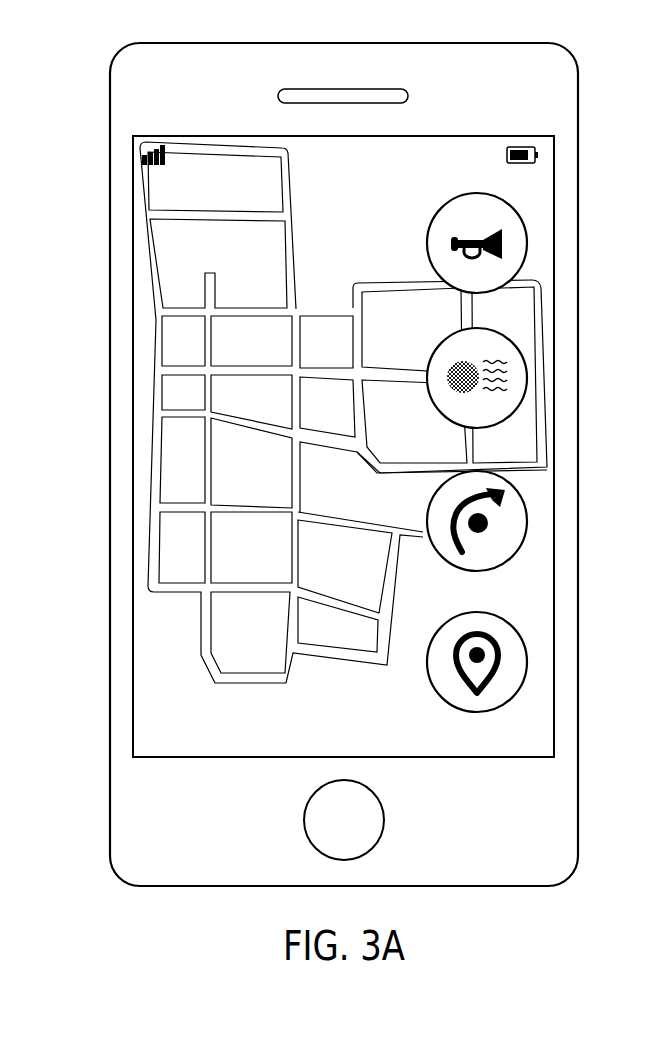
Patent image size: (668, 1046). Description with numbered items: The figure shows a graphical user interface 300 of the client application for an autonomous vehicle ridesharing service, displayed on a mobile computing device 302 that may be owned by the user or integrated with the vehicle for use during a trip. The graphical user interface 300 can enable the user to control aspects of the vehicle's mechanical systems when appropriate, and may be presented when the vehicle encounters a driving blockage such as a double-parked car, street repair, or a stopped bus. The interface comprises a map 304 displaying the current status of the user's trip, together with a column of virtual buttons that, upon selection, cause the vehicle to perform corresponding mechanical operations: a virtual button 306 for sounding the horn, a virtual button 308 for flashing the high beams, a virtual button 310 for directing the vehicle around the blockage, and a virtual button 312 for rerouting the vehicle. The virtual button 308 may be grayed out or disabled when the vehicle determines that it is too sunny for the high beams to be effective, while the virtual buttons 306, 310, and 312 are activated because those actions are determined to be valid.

The graphical user interface 300 is at (610, 194).
The mobile computing device 302 is at (160, 887).
The map 304 is at (201, 436).
The virtual button for sounding a horn 306 is at (528, 243).
The virtual button for flashing the high beams 308 is at (528, 383).
The virtual button for directing the AV to go around the blockage 310 is at (528, 525).
The virtual button for rerouting the AV 312 is at (528, 665).